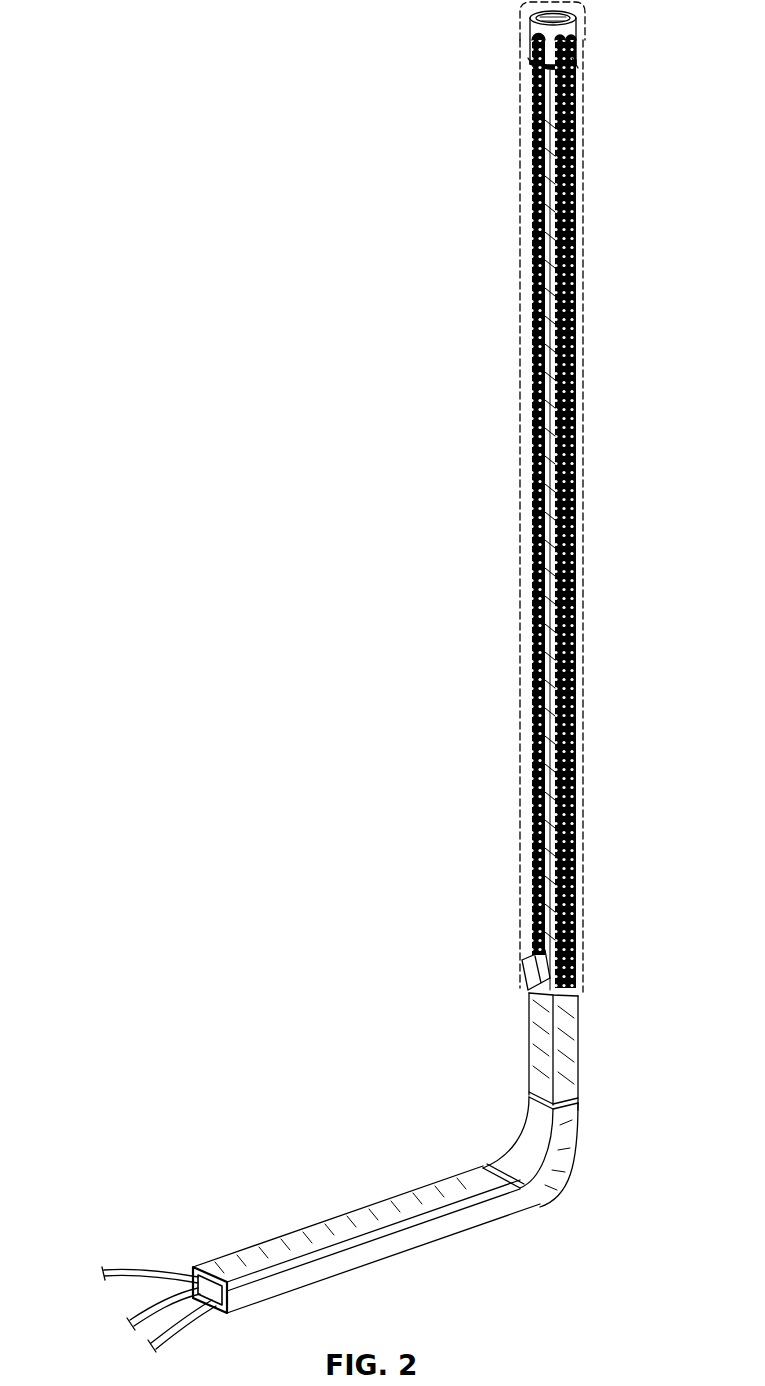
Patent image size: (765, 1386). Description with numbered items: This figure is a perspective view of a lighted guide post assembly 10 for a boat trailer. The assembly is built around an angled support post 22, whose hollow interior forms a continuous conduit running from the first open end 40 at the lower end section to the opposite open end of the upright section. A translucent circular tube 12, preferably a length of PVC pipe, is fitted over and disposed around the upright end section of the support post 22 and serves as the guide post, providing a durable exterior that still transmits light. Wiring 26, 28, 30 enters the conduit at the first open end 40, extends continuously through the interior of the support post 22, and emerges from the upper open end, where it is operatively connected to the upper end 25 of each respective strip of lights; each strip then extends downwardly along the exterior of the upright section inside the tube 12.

The assembly 10 is at (118, 60).
The translucent circular tube 12 is at (584, 238).
The upper end of the strip of lights 25 is at (526, 67).
The angled support post 22 is at (490, 1218).
The first open end 40 is at (186, 1266).
The wiring 26 is at (114, 1266).
The wiring 28 is at (130, 1314).
The wiring 30 is at (166, 1334).